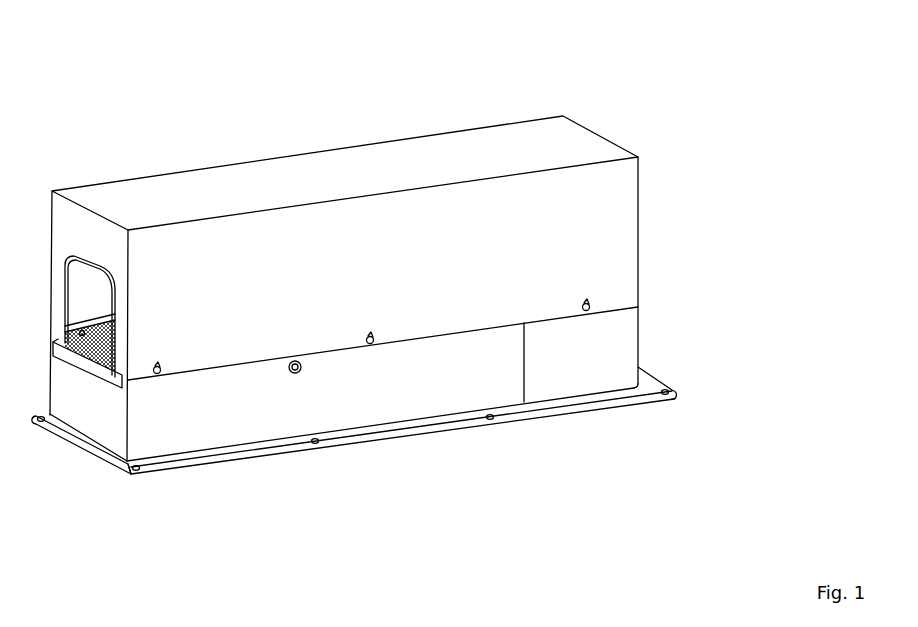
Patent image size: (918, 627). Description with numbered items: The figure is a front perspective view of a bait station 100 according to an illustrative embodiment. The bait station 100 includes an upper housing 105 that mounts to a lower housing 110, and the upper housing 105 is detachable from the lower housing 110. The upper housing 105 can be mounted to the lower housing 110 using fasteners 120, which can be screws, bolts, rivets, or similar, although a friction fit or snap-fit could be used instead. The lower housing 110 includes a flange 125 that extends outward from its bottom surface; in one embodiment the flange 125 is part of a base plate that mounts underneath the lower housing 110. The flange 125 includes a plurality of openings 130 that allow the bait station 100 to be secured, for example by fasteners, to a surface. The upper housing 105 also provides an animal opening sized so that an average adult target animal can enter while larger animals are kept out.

The bait station 100 is at (347, 126).
The upper housing 105 is at (578, 140).
The lower housing 110 is at (213, 415).
The fasteners 120 is at (376, 337).
The flange 125 is at (380, 430).
The openings 130 is at (494, 420).